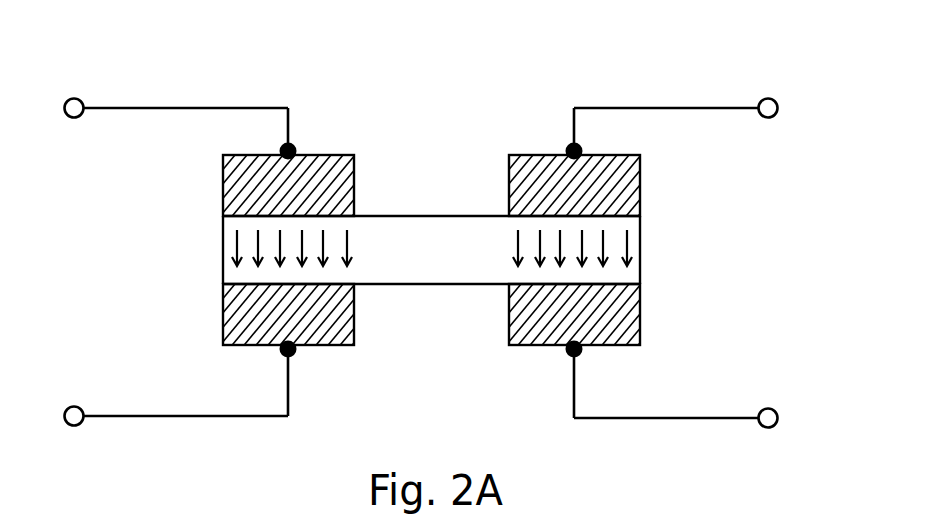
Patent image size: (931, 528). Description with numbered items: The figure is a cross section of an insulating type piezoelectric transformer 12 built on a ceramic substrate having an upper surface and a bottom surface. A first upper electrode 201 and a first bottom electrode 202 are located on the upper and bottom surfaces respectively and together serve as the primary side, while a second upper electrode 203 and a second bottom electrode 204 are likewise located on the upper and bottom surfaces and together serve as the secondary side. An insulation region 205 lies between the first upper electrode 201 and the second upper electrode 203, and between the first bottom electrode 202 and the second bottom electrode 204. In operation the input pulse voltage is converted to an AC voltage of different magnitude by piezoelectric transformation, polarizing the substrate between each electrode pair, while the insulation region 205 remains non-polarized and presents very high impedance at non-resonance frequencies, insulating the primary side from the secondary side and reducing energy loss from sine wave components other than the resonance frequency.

The insulating type piezoelectric transformer 12 is at (425, 221).
The first upper electrode 201 is at (356, 182).
The first bottom electrode 202 is at (355, 317).
The second upper electrode 203 is at (641, 184).
The second bottom electrode 204 is at (641, 313).
The insulation region 205 is at (223, 255).